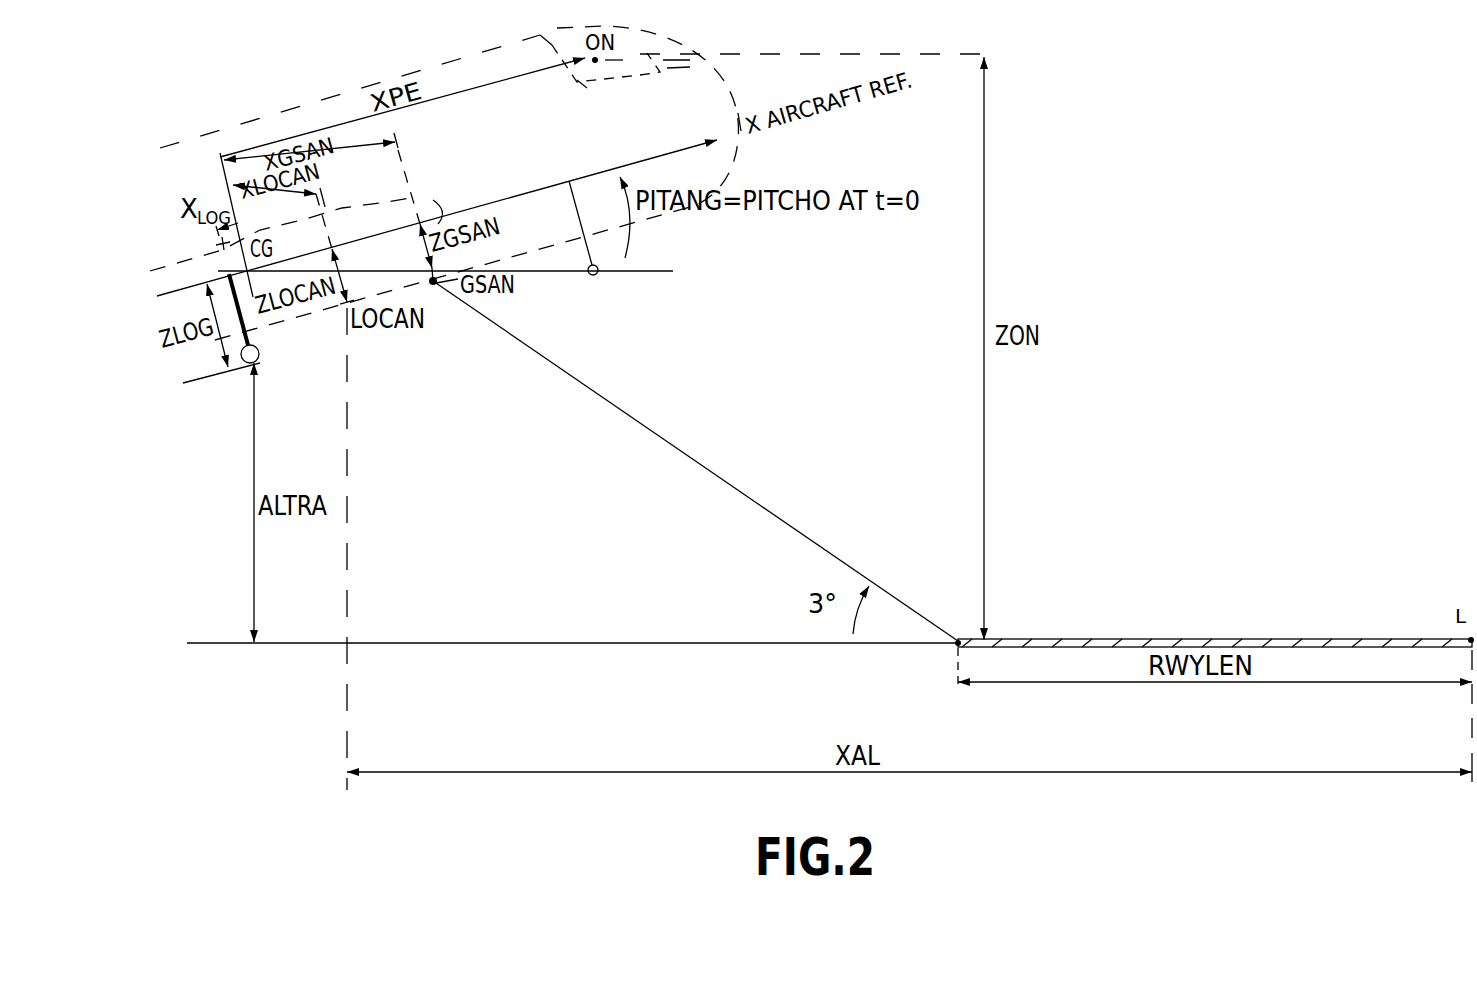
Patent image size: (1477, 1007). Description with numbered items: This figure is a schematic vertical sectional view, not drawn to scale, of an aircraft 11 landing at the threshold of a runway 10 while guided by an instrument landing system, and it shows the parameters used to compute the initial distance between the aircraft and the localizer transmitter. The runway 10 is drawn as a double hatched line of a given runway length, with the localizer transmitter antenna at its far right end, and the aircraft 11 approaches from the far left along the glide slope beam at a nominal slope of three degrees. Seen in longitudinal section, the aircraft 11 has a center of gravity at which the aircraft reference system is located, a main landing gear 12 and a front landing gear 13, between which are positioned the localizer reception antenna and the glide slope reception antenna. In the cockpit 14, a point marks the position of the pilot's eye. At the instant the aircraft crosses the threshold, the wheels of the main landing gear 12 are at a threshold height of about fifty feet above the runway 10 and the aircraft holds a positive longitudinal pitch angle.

The runway 10 is at (1184, 639).
The aircraft 11 is at (345, 92).
The main landing gear 12 is at (259, 357).
The front landing gear 13 is at (593, 277).
The cockpit 14 is at (632, 40).